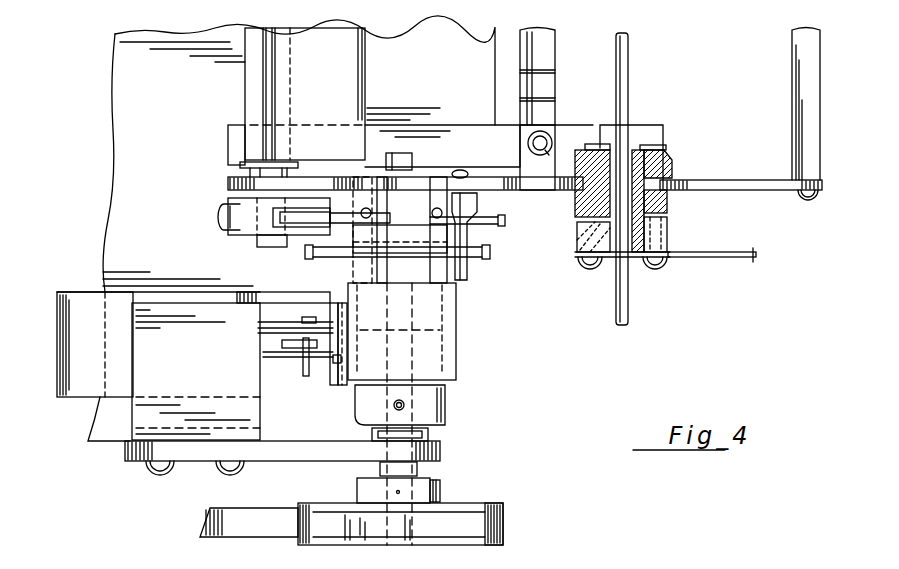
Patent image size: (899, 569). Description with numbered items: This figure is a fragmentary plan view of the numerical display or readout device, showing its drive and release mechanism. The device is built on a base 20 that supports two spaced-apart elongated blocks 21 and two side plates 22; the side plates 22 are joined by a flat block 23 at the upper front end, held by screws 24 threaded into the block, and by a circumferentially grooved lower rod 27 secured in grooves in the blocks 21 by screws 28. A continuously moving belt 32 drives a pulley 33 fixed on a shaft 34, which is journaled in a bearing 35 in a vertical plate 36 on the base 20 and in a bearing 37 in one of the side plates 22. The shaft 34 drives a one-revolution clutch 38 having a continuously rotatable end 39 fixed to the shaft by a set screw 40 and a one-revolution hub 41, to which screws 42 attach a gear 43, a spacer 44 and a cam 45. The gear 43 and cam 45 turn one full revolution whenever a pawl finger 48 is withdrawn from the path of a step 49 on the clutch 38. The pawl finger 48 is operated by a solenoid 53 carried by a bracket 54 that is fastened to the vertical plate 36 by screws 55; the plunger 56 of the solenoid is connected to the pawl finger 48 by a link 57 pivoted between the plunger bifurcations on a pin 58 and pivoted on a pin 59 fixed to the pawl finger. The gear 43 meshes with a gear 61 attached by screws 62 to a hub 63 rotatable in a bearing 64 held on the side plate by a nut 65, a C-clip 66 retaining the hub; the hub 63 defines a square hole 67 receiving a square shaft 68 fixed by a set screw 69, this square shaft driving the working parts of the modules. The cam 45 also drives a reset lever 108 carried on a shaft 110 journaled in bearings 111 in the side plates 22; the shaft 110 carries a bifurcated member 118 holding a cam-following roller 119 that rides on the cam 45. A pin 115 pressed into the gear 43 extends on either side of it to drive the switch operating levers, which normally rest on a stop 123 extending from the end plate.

The base 20 is at (425, 42).
The reset lever 108 is at (296, 96).
The bearings 111 is at (240, 164).
The bearing 37 is at (420, 176).
The lower rod 27 is at (539, 40).
The screws 28 is at (553, 150).
The square shaft 68 is at (628, 78).
The elongated blocks 21 is at (663, 128).
The C-clip 66 is at (598, 148).
The square hole 67 is at (630, 142).
The nut 65 is at (672, 170).
The bearing 64 is at (668, 208).
The hub 63 is at (668, 240).
The set screw 69 is at (583, 237).
The screws 62 is at (588, 273).
The gear 61 is at (758, 256).
The side plates 22 is at (752, 180).
The flat block 23 is at (810, 135).
The screws 24 is at (820, 197).
The bifurcated member 118 is at (230, 205).
The shaft 110 is at (257, 240).
The cam-following roller 119 is at (300, 218).
The gear 43 is at (310, 252).
The spacer 44 is at (445, 238).
The cam 45 is at (505, 222).
The screws 42 is at (430, 238).
The one-revolution hub 41 is at (375, 206).
The stop 123 is at (467, 268).
The pin 115 is at (375, 276).
The one-revolution clutch 38 is at (460, 356).
The continuously rotatable end 39 is at (447, 412).
The set screw 40 is at (392, 408).
The vertical plate 36 is at (298, 462).
The screws 55 is at (225, 476).
The bearing 35 is at (418, 470).
The pulley 33 is at (490, 503).
The shaft 34 is at (415, 530).
The belt 32 is at (253, 538).
The solenoid 53 is at (112, 350).
The bracket 54 is at (207, 350).
The pawl finger 48 is at (330, 320).
The step 49 is at (343, 330).
The plunger 56 is at (266, 342).
The link 57 is at (297, 352).
The pin 58 is at (305, 378).
The pin 59 is at (334, 363).